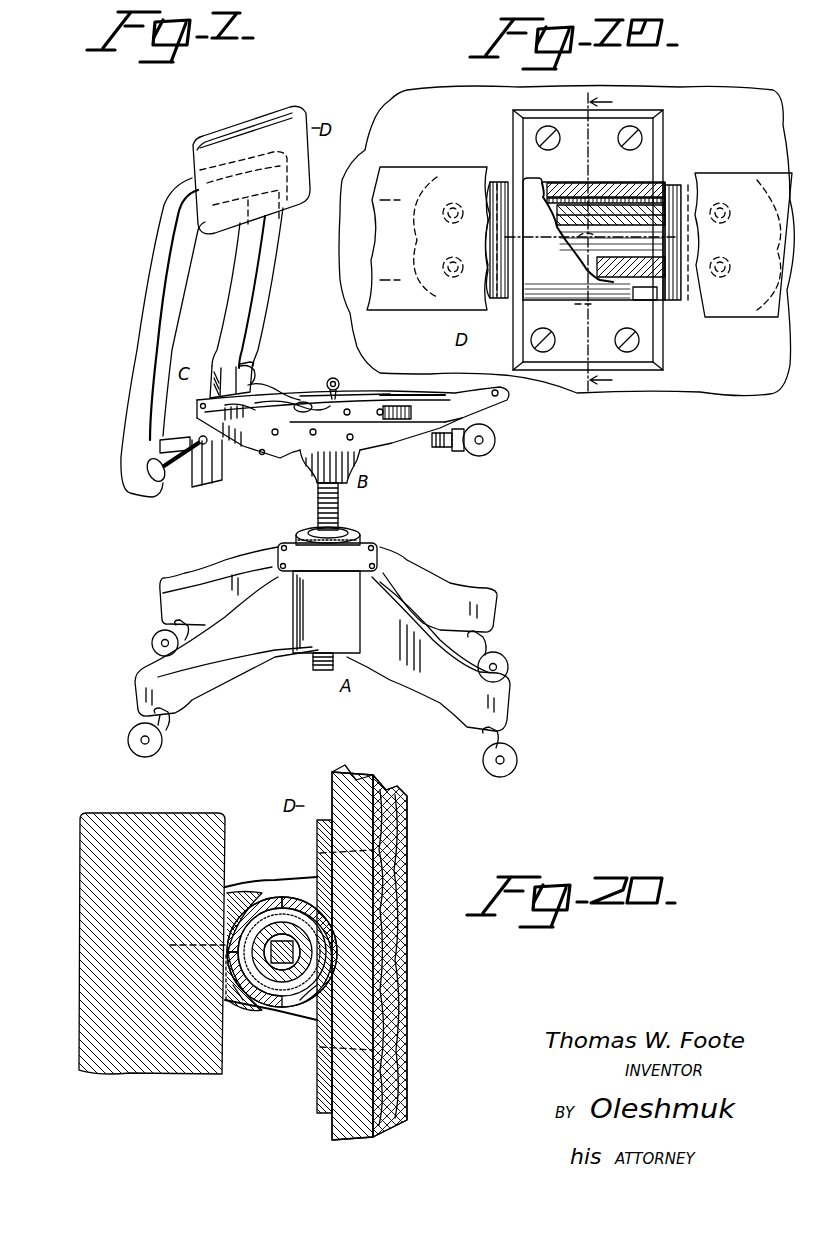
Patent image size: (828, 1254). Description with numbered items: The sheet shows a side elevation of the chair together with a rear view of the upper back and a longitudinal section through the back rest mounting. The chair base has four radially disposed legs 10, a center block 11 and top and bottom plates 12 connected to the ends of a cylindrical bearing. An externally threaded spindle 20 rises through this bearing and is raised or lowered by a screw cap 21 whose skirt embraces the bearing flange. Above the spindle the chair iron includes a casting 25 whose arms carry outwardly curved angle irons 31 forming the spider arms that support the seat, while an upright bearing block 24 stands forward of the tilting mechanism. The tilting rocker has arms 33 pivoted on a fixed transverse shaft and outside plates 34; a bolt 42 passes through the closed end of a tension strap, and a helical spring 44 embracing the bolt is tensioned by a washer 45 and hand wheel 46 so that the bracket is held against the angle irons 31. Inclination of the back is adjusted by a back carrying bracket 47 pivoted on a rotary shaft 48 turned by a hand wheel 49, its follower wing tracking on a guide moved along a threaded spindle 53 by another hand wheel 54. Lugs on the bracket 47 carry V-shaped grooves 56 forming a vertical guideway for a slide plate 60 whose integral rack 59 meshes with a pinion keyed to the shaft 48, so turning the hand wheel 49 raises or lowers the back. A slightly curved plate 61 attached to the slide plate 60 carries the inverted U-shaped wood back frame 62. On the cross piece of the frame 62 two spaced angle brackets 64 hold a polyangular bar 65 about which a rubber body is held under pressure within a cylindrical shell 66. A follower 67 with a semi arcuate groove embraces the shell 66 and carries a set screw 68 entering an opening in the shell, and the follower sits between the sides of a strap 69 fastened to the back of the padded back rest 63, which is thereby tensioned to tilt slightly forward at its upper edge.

In FIG. 1, the legs 10 is at (216, 572).
In FIG. 1, the center block 11 is at (345, 605).
In FIG. 1, the top and bottom plates 12 is at (290, 547).
In FIG. 1, the spindle 20 is at (340, 500).
In FIG. 19, the spindle 20 is at (607, 239).
In FIG. 1, the screw cap 21 is at (339, 528).
In FIG. 1, the bearing block 24 is at (400, 398).
In FIG. 1, the casting 25 is at (352, 452).
In FIG. 1, the angle irons 31 is at (428, 412).
In FIG. 1, the arms 33 is at (292, 402).
In FIG. 1, the outside plates 34 is at (232, 450).
In FIG. 1, the bolt 42 is at (485, 447).
In FIG. 1, the helical spring 44 is at (436, 448).
In FIG. 1, the washer 45 is at (459, 452).
In FIG. 1, the hand wheel 46 is at (485, 440).
In FIG. 1, the back carrying bracket 47 is at (270, 405).
In FIG. 1, the rotary shaft 48 is at (184, 432).
In FIG. 1, the hand wheel 49 is at (163, 478).
In FIG. 1, the threaded spindle 53 is at (326, 389).
In FIG. 1, the hand wheel 54 is at (343, 388).
In FIG. 1, the V-shaped grooves 56 is at (209, 472).
In FIG. 1, the rack 59 is at (235, 406).
In FIG. 1, the slide plate 60 is at (240, 374).
In FIG. 1, the curved plate 61 is at (153, 452).
In FIG. 1, the back frame 62 is at (212, 345).
In FIG. 19, the back frame 62 is at (422, 168).
In FIG. 20, the back frame 62 is at (80, 815).
In FIG. 1, the back rest 63 is at (219, 135).
In FIG. 19, the back rest 63 is at (422, 90).
In FIG. 20, the back rest 63 is at (372, 786).
In FIG. 19, the angle brackets 64 is at (497, 182).
In FIG. 20, the angle brackets 64 is at (227, 1005).
In FIG. 19, the polyangular bar 65 is at (625, 277).
In FIG. 20, the polyangular bar 65 is at (265, 905).
In FIG. 19, the cylindrical shell 66 is at (570, 192).
In FIG. 20, the cylindrical shell 66 is at (280, 1000).
In FIG. 20, the follower 67 is at (279, 922).
In FIG. 20, the set screw 68 is at (285, 990).
In FIG. 19, the strap 69 is at (565, 302).
In FIG. 20, the strap 69 is at (255, 1000).